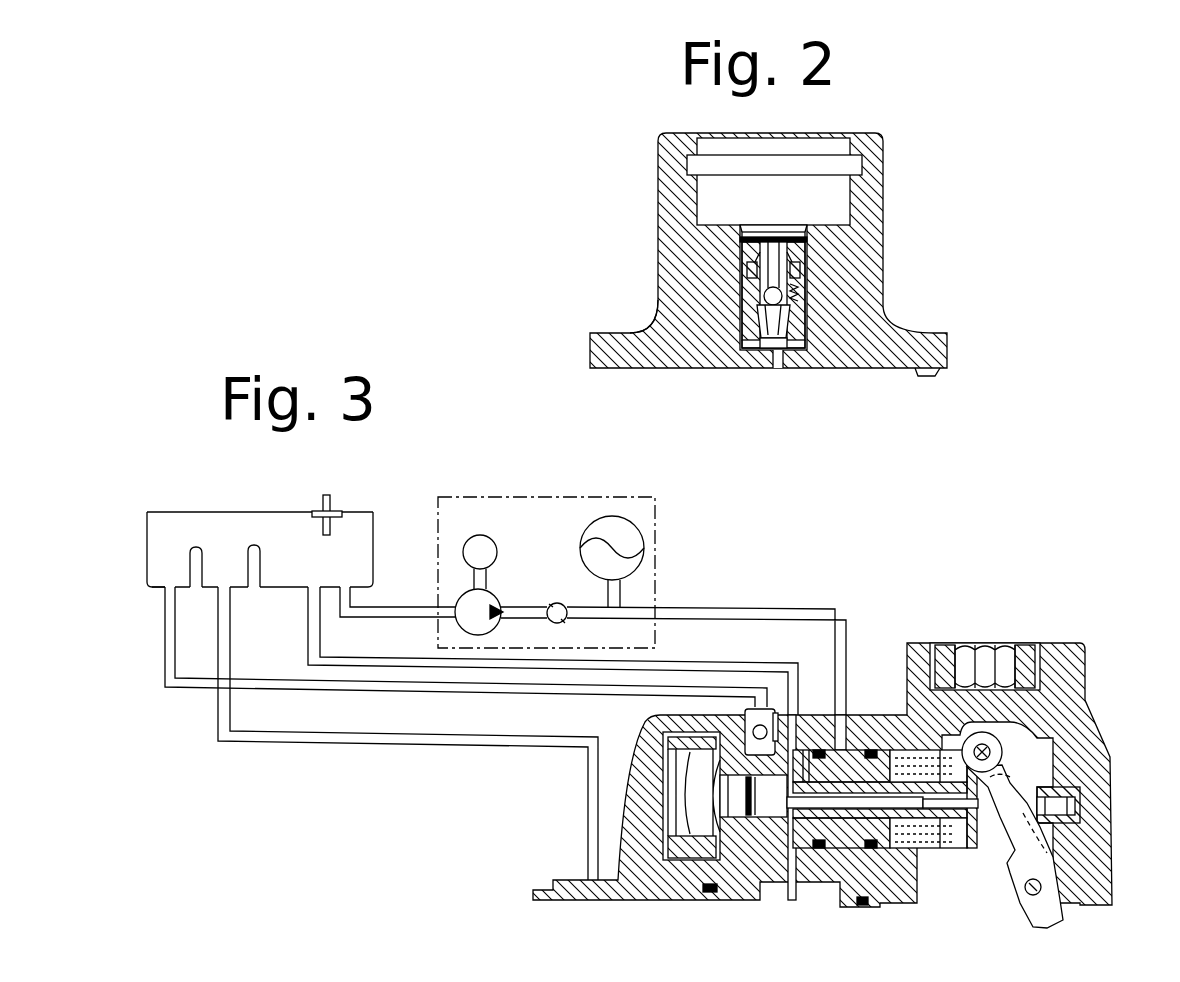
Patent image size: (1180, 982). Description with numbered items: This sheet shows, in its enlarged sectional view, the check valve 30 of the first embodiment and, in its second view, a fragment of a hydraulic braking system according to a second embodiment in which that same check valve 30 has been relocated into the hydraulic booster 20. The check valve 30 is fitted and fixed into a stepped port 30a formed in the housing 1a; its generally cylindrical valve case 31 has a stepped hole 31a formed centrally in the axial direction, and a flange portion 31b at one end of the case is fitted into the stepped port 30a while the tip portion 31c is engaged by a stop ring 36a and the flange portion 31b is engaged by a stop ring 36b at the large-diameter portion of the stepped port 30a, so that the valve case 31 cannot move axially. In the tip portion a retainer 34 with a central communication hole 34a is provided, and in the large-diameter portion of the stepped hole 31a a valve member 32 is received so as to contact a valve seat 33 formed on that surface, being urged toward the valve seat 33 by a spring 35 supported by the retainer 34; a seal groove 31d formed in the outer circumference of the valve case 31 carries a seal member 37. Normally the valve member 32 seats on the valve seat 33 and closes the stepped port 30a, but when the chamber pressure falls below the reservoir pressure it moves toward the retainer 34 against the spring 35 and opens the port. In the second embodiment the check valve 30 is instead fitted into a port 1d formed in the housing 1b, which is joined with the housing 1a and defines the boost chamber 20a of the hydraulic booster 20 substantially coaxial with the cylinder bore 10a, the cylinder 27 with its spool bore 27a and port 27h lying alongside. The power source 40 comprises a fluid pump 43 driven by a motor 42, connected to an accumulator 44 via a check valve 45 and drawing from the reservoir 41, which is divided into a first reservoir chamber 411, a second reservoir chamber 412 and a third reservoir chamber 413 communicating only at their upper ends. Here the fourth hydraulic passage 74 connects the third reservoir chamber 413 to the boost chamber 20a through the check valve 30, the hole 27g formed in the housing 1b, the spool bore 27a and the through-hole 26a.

In FIG. 2, the housing 1a is at (628, 340).
In FIG. 3, the housing 1b is at (1075, 683).
In FIG. 3, the port 1d is at (780, 745).
In FIG. 2, the cylinder bore 10a is at (922, 376).
In FIG. 3, the hydraulic booster 20 is at (1063, 754).
In FIG. 3, the boost chamber 20a is at (1025, 757).
In FIG. 3, the through-hole 26a is at (887, 752).
In FIG. 3, the cylinder 27 is at (850, 753).
In FIG. 3, the spool bore 27a is at (765, 800).
In FIG. 3, the hole 27g is at (713, 765).
In FIG. 3, the port 27h is at (806, 750).
In FIG. 2, the check valve 30 is at (645, 248).
In FIG. 3, the check valve 30 is at (752, 707).
In FIG. 2, the stepped port 30a is at (740, 223).
In FIG. 2, the valve case 31 is at (800, 252).
In FIG. 2, the stepped hole 31a is at (803, 263).
In FIG. 2, the flange portion 31b is at (743, 245).
In FIG. 2, the tip portion 31c is at (746, 338).
In FIG. 2, the seal groove 31d is at (774, 228).
In FIG. 2, the valve member 32 is at (800, 277).
In FIG. 2, the valve seat 33 is at (747, 283).
In FIG. 2, the retainer 34 is at (781, 352).
In FIG. 2, the communication hole 34a is at (777, 352).
In FIG. 2, the spring 35 is at (792, 307).
In FIG. 2, the stop ring 36a is at (797, 327).
In FIG. 2, the stop ring 36b is at (788, 262).
In FIG. 2, the seal member 37 is at (794, 290).
In FIG. 3, the power source 40 is at (667, 552).
In FIG. 3, the reservoir 41 is at (137, 563).
In FIG. 3, the first reservoir chamber 411 is at (275, 590).
In FIG. 3, the second reservoir chamber 412 is at (200, 590).
In FIG. 3, the third reservoir chamber 413 is at (150, 590).
In FIG. 3, the motor 42 is at (480, 535).
In FIG. 3, the fluid pump 43 is at (497, 593).
In FIG. 3, the accumulator 44 is at (600, 520).
In FIG. 3, the check valve 45 is at (557, 603).
In FIG. 3, the fourth hydraulic passage 74 is at (186, 690).